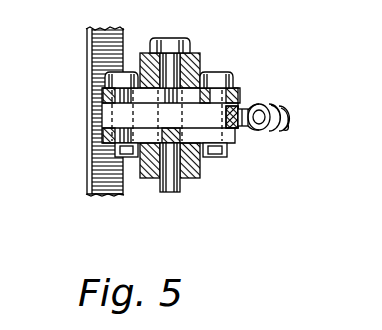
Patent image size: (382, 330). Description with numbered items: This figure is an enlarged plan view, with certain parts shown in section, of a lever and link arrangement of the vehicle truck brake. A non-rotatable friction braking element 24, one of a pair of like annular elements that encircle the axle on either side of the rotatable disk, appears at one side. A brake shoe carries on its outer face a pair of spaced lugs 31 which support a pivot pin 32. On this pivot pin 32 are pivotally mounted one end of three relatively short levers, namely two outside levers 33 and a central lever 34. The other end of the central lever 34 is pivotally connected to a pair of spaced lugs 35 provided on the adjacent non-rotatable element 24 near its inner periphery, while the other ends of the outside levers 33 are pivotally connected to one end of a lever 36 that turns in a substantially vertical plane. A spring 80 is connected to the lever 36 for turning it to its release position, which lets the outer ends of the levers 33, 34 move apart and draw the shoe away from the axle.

The non-rotatable friction braking element 24 is at (100, 152).
The lugs 31 is at (192, 95).
The pivot pin 32 is at (171, 25).
The outside levers 33 is at (198, 96).
The central lever 34 is at (120, 161).
The lugs 35 is at (103, 127).
The lever 36 is at (240, 110).
The spring 80 is at (280, 110).